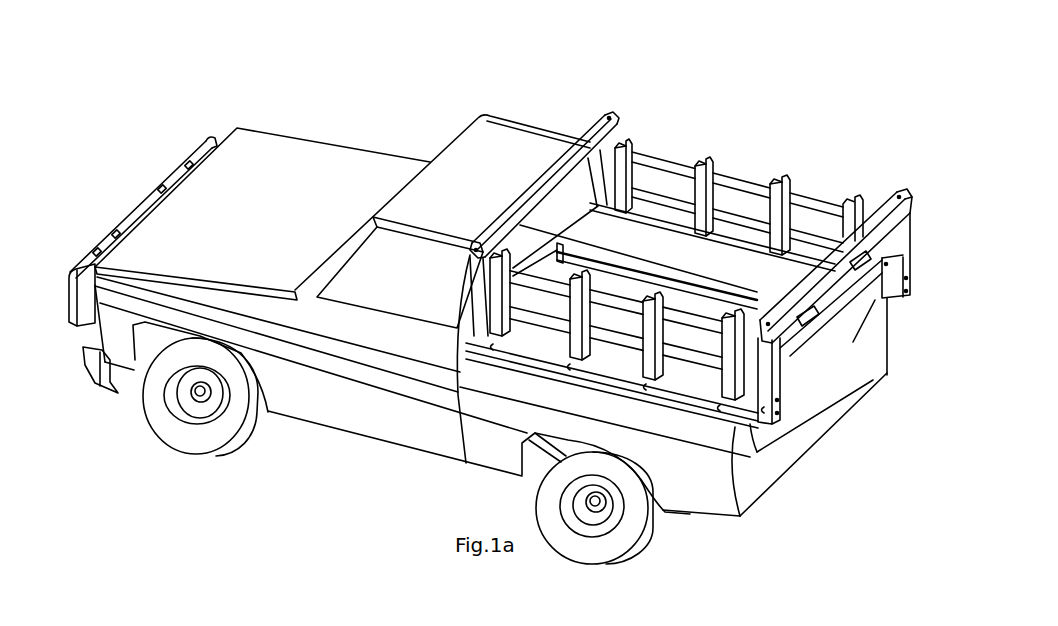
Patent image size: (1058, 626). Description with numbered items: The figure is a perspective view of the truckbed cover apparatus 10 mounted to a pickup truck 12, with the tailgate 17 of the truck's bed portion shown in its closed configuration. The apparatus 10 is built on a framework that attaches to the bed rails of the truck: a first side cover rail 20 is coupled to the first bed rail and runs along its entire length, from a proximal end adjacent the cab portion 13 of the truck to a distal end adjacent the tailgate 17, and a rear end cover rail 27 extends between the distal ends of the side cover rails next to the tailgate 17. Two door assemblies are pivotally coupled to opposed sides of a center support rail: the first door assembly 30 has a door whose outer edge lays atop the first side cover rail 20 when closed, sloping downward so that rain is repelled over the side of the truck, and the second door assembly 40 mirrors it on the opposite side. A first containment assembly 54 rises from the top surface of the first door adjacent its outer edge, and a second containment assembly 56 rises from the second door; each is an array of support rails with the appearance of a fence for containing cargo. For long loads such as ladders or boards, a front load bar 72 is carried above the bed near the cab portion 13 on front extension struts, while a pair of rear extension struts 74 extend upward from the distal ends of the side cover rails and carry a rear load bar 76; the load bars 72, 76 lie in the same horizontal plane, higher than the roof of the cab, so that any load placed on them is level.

The truckbed cover apparatus 10 is at (747, 72).
The pickup truck 12 is at (306, 80).
The cab portion 13 is at (508, 147).
The tailgate 17 is at (822, 415).
The first side cover rail 20 is at (612, 378).
The rear end cover rail 27 is at (845, 318).
The first door assembly 30 is at (688, 387).
The second door assembly 40 is at (670, 247).
The first containment assembly 54 is at (535, 333).
The second containment assembly 56 is at (818, 180).
The front load bar 72 is at (567, 163).
The rear extension struts 74 is at (908, 248).
The rear load bar 76 is at (880, 217).